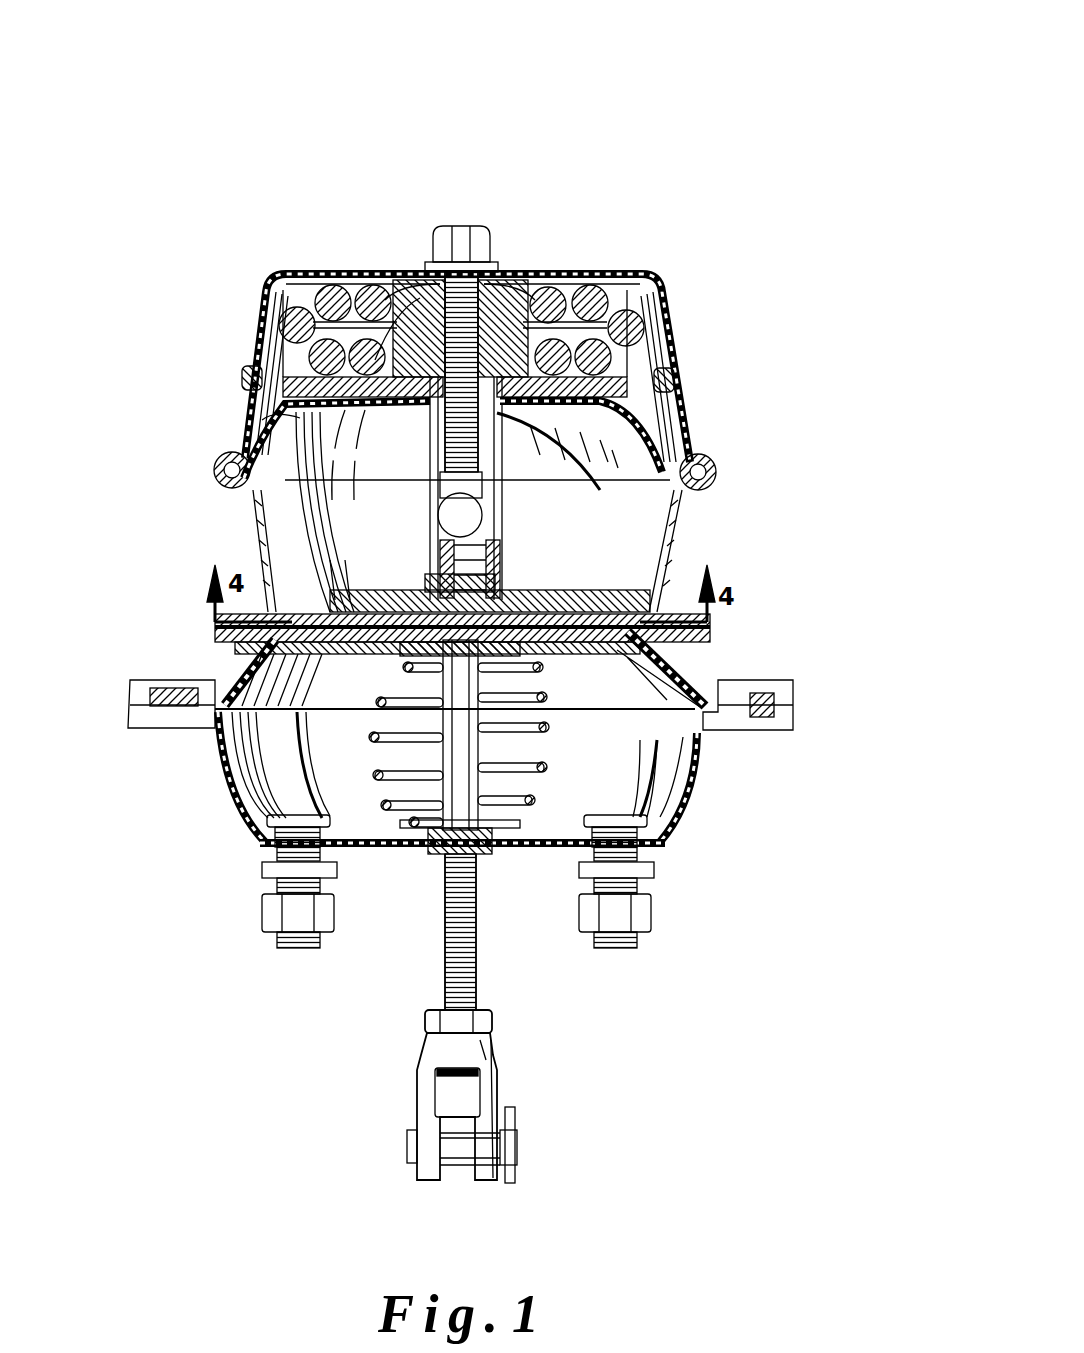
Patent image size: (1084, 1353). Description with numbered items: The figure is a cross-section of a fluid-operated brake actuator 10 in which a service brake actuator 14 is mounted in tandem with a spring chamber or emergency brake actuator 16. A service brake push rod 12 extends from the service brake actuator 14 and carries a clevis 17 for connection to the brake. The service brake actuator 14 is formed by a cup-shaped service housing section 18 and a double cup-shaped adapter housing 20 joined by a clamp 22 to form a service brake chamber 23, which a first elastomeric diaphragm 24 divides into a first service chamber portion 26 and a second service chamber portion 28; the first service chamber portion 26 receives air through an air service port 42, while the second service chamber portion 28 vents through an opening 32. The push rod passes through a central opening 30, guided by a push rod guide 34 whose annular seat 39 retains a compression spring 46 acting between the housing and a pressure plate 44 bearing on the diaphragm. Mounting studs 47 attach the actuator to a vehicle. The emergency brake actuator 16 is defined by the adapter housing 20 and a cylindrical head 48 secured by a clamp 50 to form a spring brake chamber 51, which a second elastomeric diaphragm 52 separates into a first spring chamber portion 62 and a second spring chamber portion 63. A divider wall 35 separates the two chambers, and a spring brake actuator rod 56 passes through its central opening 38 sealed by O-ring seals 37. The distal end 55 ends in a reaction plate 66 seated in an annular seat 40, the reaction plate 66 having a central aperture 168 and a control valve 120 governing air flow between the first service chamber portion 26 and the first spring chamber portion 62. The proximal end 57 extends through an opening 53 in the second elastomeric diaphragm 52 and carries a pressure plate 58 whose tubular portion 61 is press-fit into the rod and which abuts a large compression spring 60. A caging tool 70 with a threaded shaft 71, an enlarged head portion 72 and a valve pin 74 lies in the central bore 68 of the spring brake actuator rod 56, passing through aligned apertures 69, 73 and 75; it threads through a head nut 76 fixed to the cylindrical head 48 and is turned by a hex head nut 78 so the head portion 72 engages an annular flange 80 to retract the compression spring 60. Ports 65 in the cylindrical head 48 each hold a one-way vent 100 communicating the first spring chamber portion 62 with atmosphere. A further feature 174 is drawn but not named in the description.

The fluid-operated brake actuator 10 is at (690, 140).
The service brake push rod 12 is at (480, 975).
The service brake actuator 14 is at (682, 862).
The emergency brake actuator 16 is at (533, 348).
The clevis 17 is at (415, 1120).
The cup-shaped service housing section 18 is at (527, 850).
The adapter housing 20 is at (692, 585).
The clamp 22 is at (796, 708).
The service brake chamber 23 is at (297, 767).
The first elastomeric diaphragm 24 is at (665, 665).
The first service chamber portion 26 is at (650, 628).
The second service chamber portion 28 is at (514, 737).
The central opening 30 is at (442, 787).
The opening 32 is at (222, 772).
The push rod guide 34 is at (452, 848).
The divider wall 35 is at (215, 618).
The O-ring seals 37 is at (470, 590).
The central opening 38 is at (418, 570).
The annular seat 39 is at (440, 850).
The annular seat 40 is at (565, 648).
The air service port 42 is at (245, 560).
The pressure plate 44 is at (498, 744).
The compression spring 46 is at (548, 780).
The mounting studs 47 is at (298, 950).
The cylindrical head 48 is at (667, 275).
The clamp 50 is at (232, 455).
The spring brake chamber 51 is at (292, 423).
The second elastomeric diaphragm 52 is at (250, 520).
The opening 53 is at (513, 293).
The distal end 55 is at (326, 690).
The spring brake actuator rod 56 is at (505, 462).
The proximal end 57 is at (525, 305).
The pressure plate 58 is at (655, 412).
The compression spring 60 is at (600, 303).
The tubular portion 61 is at (563, 300).
The first spring chamber portion 62 is at (640, 306).
The second spring chamber portion 63 is at (630, 544).
The ports 65 is at (672, 394).
The reaction plate 66 is at (485, 549).
The central bore 68 is at (600, 490).
The aperture 69 is at (520, 290).
The caging tool 70 is at (474, 488).
The threaded elongated shaft 71 is at (487, 442).
The enlarged head portion 72 is at (460, 504).
The aperture 73 is at (530, 309).
The valve pin 74 is at (425, 545).
The aperture 75 is at (463, 238).
The head nut 76 is at (500, 272).
The hex head nut 78 is at (495, 262).
The annular flange 80 is at (428, 292).
The one-way vent 100 is at (248, 370).
The control valve 120 is at (428, 560).
The central aperture 168 is at (392, 672).
The skirt 174 is at (326, 580).